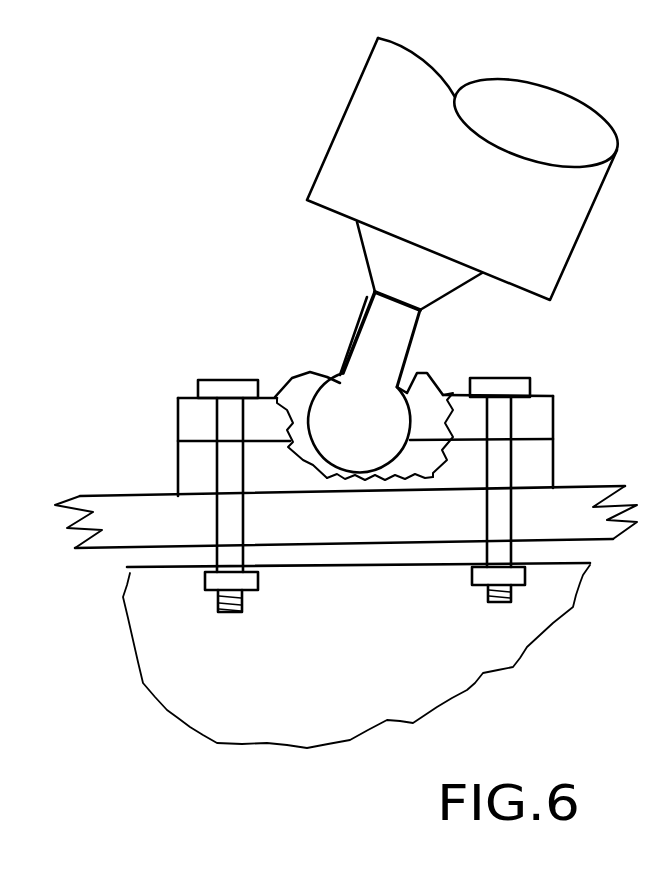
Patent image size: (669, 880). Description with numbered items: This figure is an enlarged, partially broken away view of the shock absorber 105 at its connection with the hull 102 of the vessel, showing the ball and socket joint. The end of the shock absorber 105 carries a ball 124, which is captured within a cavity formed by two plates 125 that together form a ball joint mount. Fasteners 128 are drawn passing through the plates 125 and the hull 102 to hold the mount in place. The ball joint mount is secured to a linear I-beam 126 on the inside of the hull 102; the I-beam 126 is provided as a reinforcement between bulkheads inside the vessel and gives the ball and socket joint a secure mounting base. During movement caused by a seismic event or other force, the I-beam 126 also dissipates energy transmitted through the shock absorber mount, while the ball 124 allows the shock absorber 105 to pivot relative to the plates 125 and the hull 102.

The shock absorber 105 is at (387, 115).
The ball 124 is at (352, 418).
The plates 125 is at (190, 487).
The bolt 128 is at (497, 378).
The hull 102 is at (365, 520).
The linear I-beam 126 is at (362, 720).